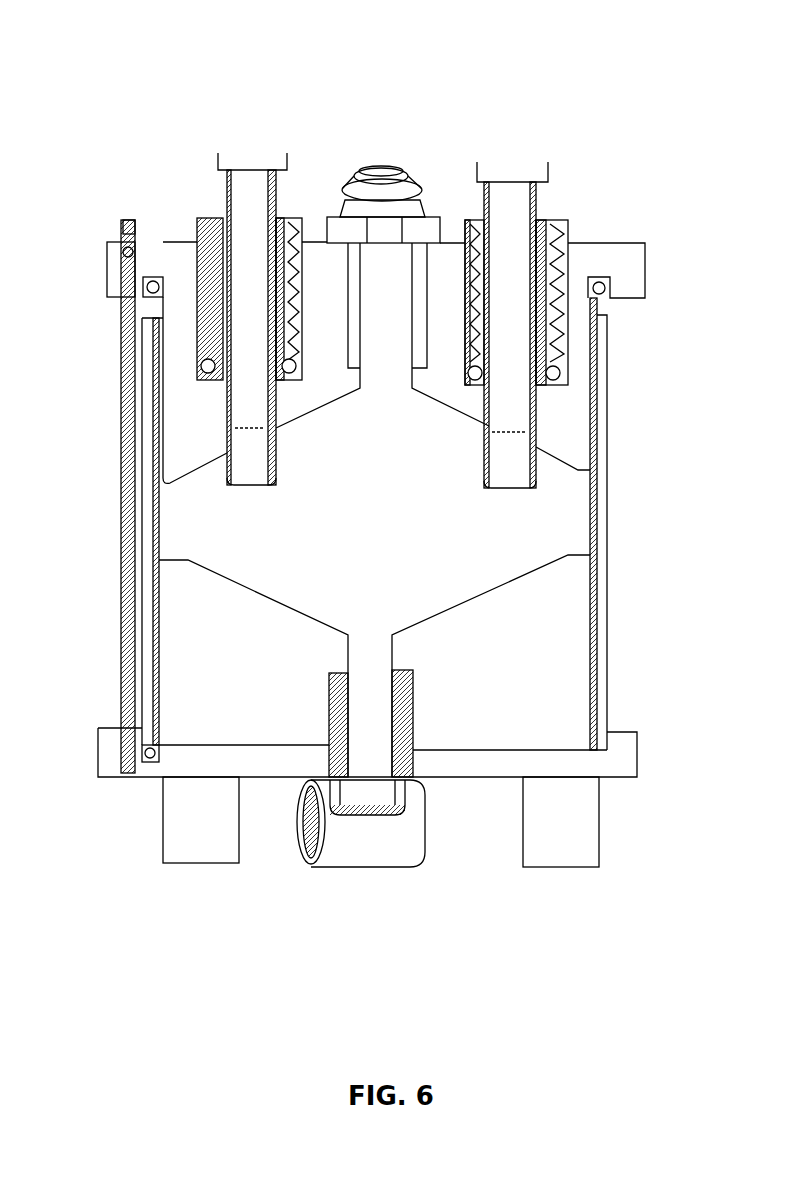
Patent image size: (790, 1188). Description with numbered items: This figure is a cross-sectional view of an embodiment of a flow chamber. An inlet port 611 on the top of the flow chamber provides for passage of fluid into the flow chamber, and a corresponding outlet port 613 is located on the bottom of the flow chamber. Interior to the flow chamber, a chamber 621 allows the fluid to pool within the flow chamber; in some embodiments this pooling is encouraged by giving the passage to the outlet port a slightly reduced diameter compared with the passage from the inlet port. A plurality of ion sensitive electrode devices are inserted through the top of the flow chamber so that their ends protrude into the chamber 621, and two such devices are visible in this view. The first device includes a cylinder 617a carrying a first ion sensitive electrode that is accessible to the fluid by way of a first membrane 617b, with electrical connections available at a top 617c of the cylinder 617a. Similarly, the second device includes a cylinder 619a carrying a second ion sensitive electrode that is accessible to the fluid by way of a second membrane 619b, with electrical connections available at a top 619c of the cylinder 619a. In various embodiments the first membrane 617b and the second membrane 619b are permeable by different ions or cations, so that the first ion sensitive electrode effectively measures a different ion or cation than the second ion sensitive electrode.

The inlet port 611 is at (380, 168).
The outlet port 613 is at (312, 853).
The cylinder 617a is at (275, 195).
The first membrane 617b is at (253, 487).
The top of the cylinder 617c is at (245, 168).
The cylinder 619a is at (483, 402).
The second membrane 619b is at (510, 490).
The top of the cylinder 619c is at (505, 180).
The chamber 621 is at (374, 510).